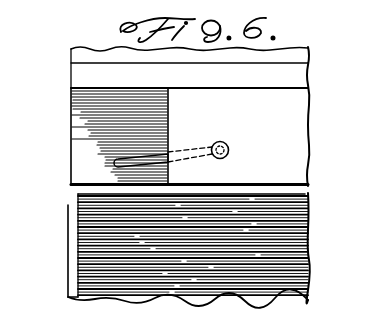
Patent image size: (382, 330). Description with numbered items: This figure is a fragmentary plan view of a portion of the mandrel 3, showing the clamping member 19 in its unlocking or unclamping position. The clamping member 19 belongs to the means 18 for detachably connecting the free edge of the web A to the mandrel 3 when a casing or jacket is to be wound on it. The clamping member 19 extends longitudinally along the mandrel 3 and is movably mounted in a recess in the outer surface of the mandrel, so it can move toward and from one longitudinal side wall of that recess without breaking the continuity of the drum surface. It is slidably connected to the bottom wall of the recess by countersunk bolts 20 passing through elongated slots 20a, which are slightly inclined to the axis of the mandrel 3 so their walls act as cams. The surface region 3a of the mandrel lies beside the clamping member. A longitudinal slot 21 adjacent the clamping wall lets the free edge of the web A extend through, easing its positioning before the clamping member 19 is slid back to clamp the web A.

The mandrel 3 is at (72, 248).
The hatched surface portion 3a is at (72, 163).
The means for detachably connecting the free edge of the web 18 is at (308, 167).
The clamping member 19 is at (305, 130).
The countersunk bolts 20 is at (229, 148).
The elongated slots 20a is at (160, 156).
The longitudinal slot 21 is at (314, 183).
The web A is at (306, 297).